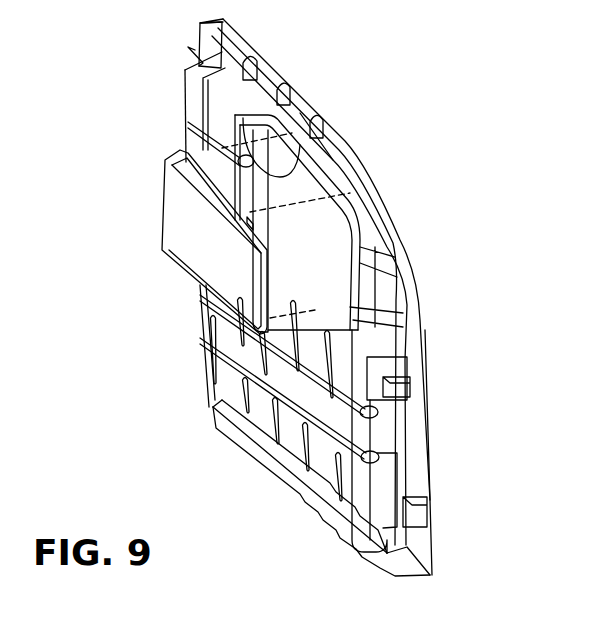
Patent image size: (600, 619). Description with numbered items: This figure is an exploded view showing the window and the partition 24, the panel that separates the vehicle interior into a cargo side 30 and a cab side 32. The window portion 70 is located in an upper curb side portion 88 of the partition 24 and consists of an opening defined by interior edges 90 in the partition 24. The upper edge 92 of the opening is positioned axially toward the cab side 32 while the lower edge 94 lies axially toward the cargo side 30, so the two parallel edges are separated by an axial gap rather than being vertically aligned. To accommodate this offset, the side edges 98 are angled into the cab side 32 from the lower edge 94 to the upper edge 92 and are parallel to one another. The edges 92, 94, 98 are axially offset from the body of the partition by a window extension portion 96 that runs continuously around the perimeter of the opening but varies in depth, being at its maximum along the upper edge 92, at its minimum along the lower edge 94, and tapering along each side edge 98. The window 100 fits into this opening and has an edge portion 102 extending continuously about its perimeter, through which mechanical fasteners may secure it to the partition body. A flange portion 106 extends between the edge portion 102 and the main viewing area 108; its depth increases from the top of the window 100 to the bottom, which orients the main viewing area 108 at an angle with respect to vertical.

The partition 24 is at (212, 33).
The cargo side 30 is at (292, 505).
The cab side 32 is at (388, 210).
The window portion 70 is at (160, 158).
The upper curb side portion 88 is at (345, 160).
The interior edges 90 is at (253, 137).
The upper edge 92 is at (343, 203).
The lower edge 94 is at (320, 300).
The window extension portion 96 is at (247, 60).
The side edges 98 is at (268, 175).
The window 100 is at (163, 237).
The edge portion 102 is at (240, 400).
The flange portion 106 is at (238, 328).
The main viewing area 108 is at (213, 263).